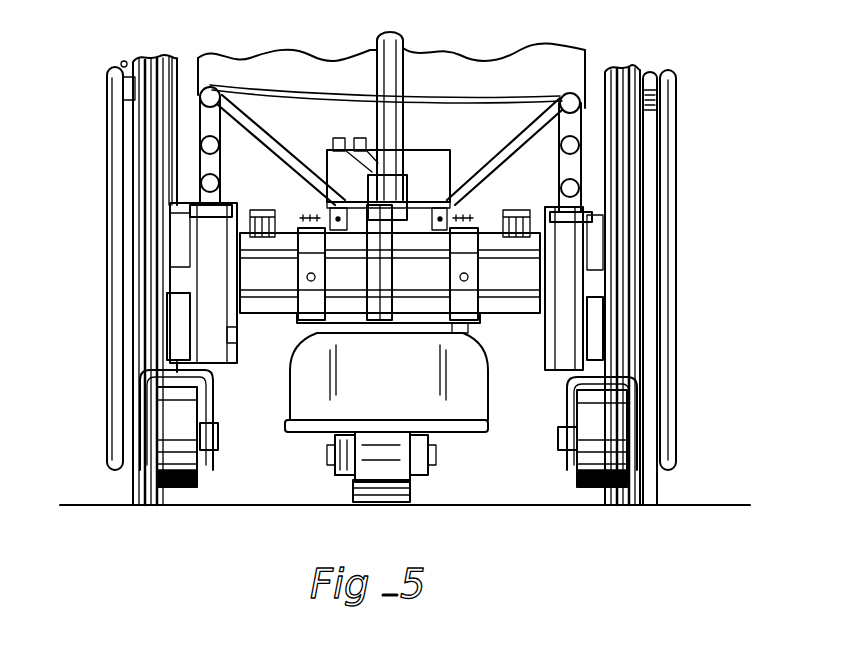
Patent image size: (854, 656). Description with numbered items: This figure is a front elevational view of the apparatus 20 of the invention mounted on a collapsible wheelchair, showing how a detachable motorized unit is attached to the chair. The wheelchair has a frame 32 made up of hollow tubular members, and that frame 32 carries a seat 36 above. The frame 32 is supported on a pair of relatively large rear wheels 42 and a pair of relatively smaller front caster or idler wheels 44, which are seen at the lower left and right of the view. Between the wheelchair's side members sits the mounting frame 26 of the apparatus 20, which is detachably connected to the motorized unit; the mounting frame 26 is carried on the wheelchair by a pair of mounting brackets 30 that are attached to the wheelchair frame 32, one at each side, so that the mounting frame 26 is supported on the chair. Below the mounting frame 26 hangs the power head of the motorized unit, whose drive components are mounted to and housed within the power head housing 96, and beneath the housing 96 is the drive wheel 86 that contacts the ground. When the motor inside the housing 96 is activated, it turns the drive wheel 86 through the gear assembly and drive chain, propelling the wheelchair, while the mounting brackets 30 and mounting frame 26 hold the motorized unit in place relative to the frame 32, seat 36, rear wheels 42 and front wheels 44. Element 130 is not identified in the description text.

The apparatus 20 is at (311, 150).
The mounting frame 26 is at (510, 338).
The mounting brackets 30 is at (210, 272).
The frame 32 is at (592, 170).
The seat 36 is at (550, 86).
The rear wheels 42 is at (137, 482).
The front caster wheels 44 is at (187, 490).
The drive wheel 86 is at (408, 502).
The power head housing 96 is at (332, 403).
The center block 130 is at (426, 158).